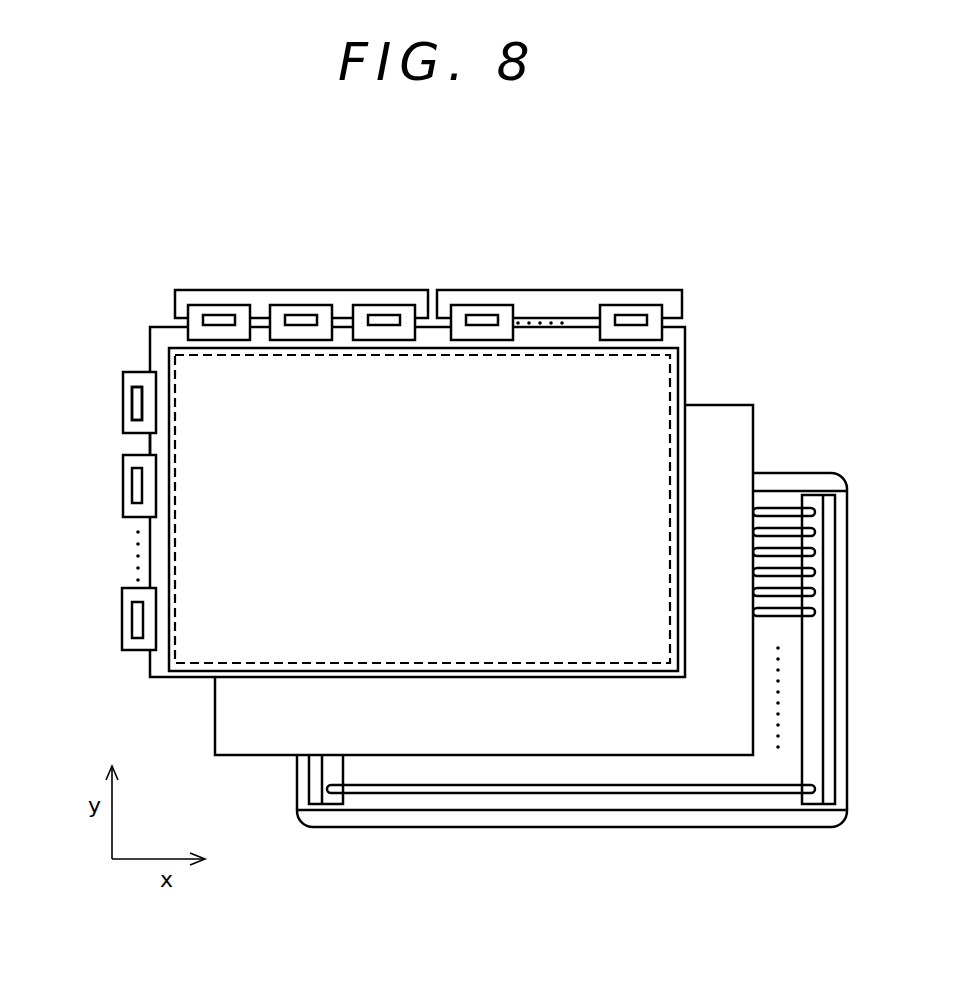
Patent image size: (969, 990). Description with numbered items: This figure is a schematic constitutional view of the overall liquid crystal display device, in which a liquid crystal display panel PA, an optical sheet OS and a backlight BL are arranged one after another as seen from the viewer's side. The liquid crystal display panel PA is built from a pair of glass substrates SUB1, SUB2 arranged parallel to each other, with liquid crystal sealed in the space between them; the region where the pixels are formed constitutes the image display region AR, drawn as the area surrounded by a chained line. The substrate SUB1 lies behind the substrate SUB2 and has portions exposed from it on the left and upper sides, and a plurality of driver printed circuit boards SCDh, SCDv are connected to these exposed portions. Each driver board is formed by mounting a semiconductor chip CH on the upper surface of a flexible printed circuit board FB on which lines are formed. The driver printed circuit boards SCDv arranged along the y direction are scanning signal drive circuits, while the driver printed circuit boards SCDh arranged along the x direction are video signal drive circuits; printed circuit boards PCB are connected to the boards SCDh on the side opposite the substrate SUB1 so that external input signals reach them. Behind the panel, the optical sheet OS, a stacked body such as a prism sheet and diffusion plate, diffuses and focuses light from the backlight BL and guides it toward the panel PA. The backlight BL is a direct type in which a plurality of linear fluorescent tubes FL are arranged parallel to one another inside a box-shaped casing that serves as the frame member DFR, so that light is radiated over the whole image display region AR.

The substrate SUB1 is at (162, 327).
The substrate SUB2 is at (197, 673).
The image display region AR is at (422, 509).
The printed circuit board PCB is at (300, 290).
The driver printed circuit board SCDh is at (222, 305).
The driver printed circuit board SCDv is at (132, 372).
The liquid crystal display panel PA is at (507, 275).
The semiconductor chip CH is at (137, 400).
The flexible printed circuit board FB is at (137, 425).
The optical sheet OS is at (713, 393).
The fluorescent tube FL is at (502, 789).
The backlight BL is at (674, 843).
The frame member DFR is at (772, 827).